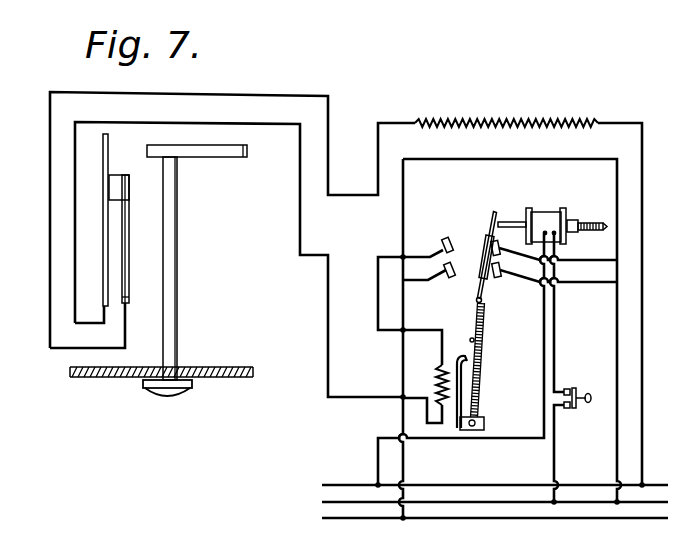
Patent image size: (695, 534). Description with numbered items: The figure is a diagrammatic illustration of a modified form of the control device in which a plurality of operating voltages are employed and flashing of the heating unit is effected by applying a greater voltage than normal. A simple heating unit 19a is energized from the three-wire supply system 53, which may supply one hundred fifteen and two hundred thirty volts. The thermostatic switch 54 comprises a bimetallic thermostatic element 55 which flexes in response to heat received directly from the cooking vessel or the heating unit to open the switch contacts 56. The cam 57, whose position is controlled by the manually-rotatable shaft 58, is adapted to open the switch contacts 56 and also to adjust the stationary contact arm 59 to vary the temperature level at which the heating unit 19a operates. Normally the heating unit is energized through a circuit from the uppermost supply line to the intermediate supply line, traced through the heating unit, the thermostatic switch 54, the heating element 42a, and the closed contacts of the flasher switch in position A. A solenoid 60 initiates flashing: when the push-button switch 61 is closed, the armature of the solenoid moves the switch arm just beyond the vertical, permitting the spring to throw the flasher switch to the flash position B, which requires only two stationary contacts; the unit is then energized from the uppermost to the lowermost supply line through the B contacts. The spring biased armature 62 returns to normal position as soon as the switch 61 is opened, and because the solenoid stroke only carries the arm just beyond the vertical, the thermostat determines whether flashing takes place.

The heating unit 19a is at (544, 93).
The heating element 42a is at (442, 365).
The three-wire supply system 53 is at (467, 518).
The thermostatic switch 54 is at (113, 242).
The bimetallic thermostatic element 55 is at (129, 300).
The switch contacts 56 is at (119, 175).
The cam 57 is at (208, 153).
The manually-rotatable shaft 58 is at (170, 320).
The stationary contact arm 59 is at (103, 164).
The solenoid 60 is at (545, 218).
The push-button switch 61 is at (580, 390).
The spring biased armature 62 is at (568, 230).
The flasher switch position A is at (484, 321).
The flash position B is at (449, 250).